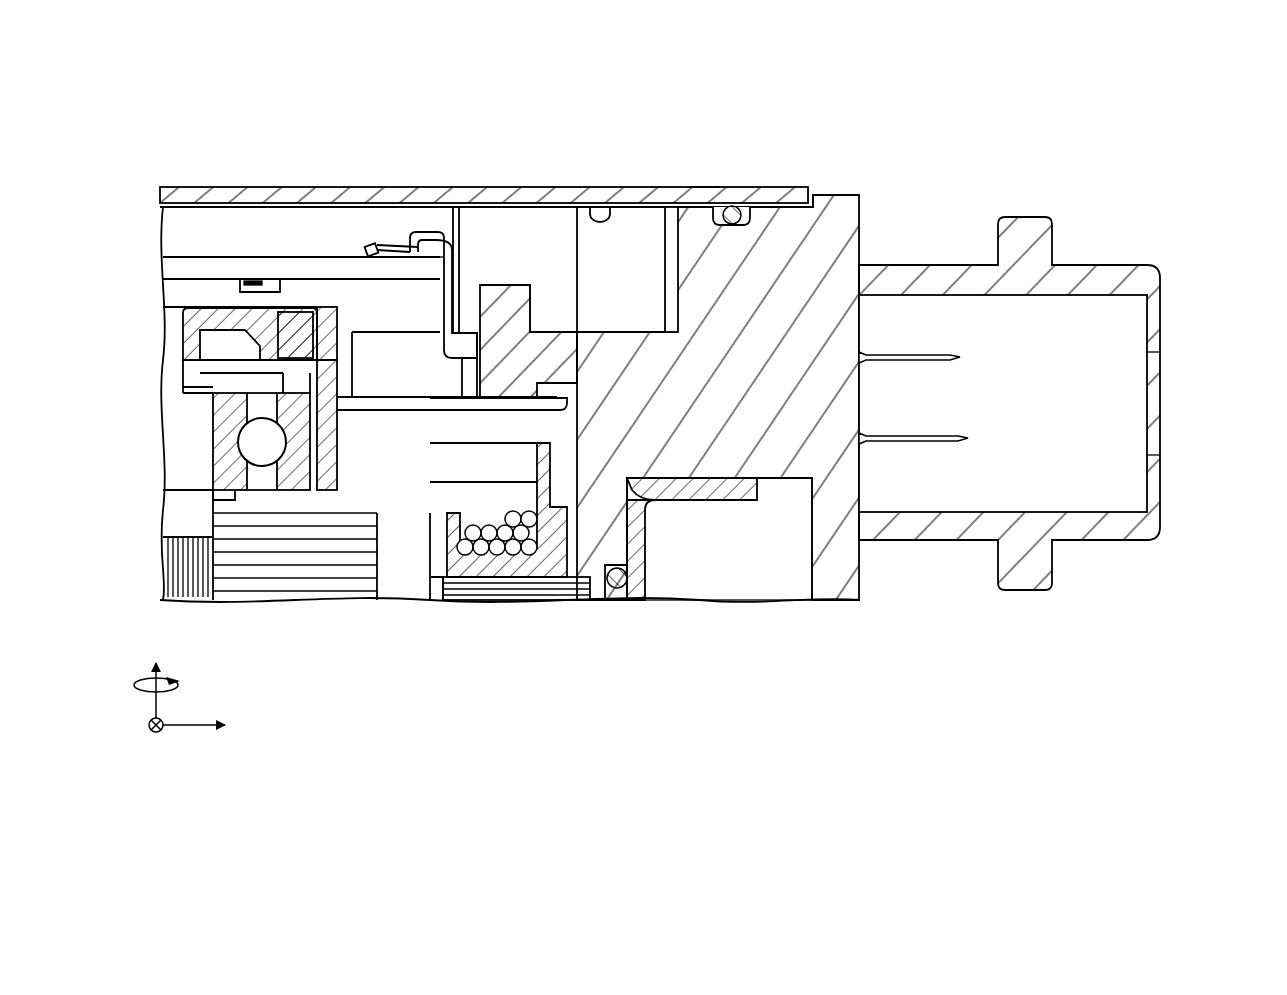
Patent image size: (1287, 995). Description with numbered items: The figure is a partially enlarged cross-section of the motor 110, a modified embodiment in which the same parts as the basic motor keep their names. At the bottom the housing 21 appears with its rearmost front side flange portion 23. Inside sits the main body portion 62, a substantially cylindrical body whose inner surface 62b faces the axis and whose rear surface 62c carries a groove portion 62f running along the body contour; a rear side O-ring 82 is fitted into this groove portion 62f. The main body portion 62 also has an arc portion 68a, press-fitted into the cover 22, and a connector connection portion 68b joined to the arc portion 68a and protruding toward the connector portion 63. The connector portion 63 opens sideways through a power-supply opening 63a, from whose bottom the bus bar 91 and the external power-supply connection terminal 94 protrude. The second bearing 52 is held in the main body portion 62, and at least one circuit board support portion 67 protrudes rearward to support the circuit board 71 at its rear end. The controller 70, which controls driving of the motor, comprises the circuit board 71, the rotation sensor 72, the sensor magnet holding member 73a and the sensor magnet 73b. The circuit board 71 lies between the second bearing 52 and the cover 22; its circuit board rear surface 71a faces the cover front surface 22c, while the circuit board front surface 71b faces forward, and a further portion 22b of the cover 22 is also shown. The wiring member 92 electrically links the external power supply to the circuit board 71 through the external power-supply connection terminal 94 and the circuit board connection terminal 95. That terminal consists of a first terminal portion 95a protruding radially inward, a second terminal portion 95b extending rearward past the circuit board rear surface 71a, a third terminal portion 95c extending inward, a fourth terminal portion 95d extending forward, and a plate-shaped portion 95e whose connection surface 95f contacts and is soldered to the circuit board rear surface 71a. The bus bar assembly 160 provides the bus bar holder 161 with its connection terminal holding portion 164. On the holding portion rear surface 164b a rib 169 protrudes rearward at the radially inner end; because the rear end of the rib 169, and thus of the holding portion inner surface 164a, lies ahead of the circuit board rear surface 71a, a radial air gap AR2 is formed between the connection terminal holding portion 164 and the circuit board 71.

The motor 110 is at (1128, 118).
The controller 70 is at (196, 242).
The circuit board 71 is at (264, 276).
The circuit board rear surface 71a is at (238, 270).
The circuit board front surface 71b is at (208, 290).
The rotation sensor 72 is at (266, 290).
The sensor magnet holding member 73a is at (217, 323).
The sensor magnet 73b is at (297, 392).
The second bearing 52 is at (218, 440).
The circuit board support portion 67 is at (327, 305).
The circuit board connection terminal 95 is at (424, 226).
The first terminal portion 95a is at (467, 357).
The second terminal portion 95b is at (454, 273).
The third terminal portion 95c is at (445, 238).
The fourth terminal portion 95d is at (430, 262).
The plate-shaped portion 95e is at (396, 250).
The connection surface 95f is at (372, 245).
The wiring member 92 is at (412, 84).
The external power-supply connection terminal 94 is at (940, 355).
The bus bar 91 is at (935, 437).
The air gap AR2 is at (503, 258).
The rib 169 is at (510, 305).
The connection terminal holding portion 164 is at (620, 332).
The holding portion inner surface 164a is at (478, 398).
The holding portion rear surface 164b is at (538, 325).
The cover 22 is at (752, 80).
The top plate portion 22b is at (703, 200).
The cover front surface 22c is at (600, 212).
The main body portion 62 is at (603, 450).
The inner surface of the main body portion 62b is at (672, 292).
The rear surface of the main body portion 62c is at (790, 215).
The groove portion 62f is at (745, 232).
The rear side O-ring 82 is at (738, 213).
The bus bar holder 161 is at (840, 196).
The bus bar assembly 160 is at (1090, 582).
The connector portion 63 is at (1093, 278).
The power-supply opening 63a is at (1118, 298).
The front side flange portion 23 is at (672, 495).
The housing 21 is at (700, 676).
The arc portion 68a is at (636, 560).
The connector connection portion 68b is at (764, 448).